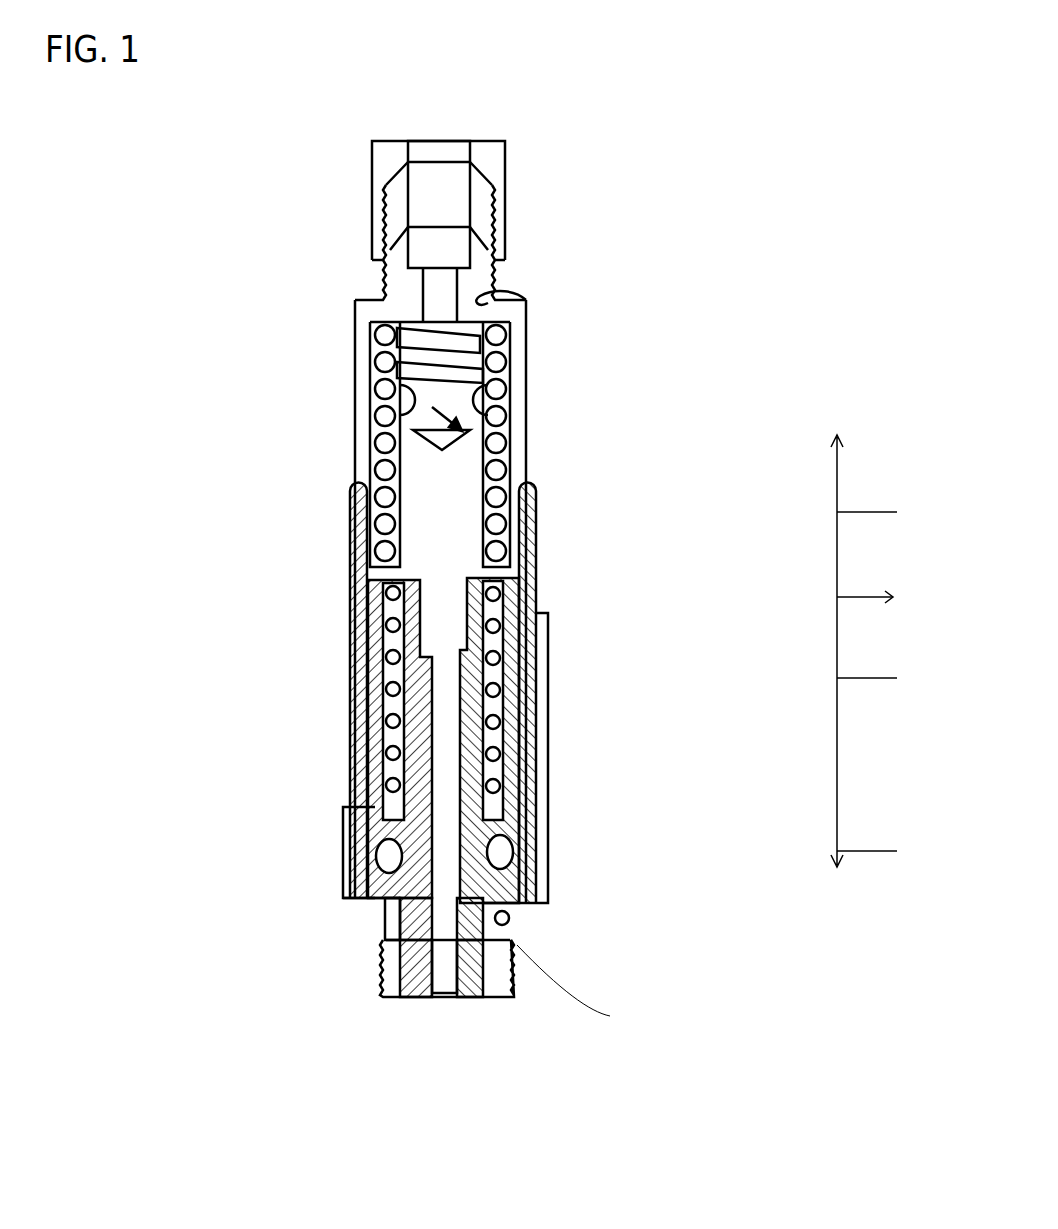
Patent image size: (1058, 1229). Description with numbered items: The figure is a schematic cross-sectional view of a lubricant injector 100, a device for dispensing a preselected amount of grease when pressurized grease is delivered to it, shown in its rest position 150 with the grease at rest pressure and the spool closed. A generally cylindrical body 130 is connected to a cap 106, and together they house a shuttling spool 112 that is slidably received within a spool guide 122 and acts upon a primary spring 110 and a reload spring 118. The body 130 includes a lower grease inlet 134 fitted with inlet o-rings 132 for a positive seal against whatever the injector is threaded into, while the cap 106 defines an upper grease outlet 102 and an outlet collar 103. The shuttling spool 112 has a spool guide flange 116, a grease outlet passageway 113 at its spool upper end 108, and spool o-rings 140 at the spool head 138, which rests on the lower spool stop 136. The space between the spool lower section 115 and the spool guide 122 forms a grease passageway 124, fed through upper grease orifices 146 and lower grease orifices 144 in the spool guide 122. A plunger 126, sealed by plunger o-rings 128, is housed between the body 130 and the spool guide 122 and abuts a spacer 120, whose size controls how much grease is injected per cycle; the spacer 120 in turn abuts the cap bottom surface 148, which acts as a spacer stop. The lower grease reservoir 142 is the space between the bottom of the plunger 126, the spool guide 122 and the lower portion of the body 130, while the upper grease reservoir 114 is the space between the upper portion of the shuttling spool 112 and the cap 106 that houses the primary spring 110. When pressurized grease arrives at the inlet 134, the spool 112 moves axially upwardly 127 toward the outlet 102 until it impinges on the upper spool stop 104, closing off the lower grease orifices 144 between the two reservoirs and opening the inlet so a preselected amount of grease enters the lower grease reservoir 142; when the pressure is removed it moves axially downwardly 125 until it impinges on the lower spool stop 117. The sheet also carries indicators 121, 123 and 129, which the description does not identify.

The lubricant injector 100 is at (762, 112).
The rest position 150 is at (252, 194).
The outlet 102 is at (425, 182).
The outlet collar 103 is at (493, 157).
The upper spool stop 104 is at (473, 323).
The cap 106 is at (527, 320).
The spool upper end 108 is at (372, 378).
The primary spring 110 is at (507, 397).
The shuttling spool 112 is at (438, 503).
The grease outlet passageway 113 is at (490, 433).
The upper grease reservoir 114 is at (372, 440).
The spool lower section 115 is at (440, 748).
The spool guide flange 116 is at (350, 568).
The lower spool stop 117 is at (536, 567).
The reload spring 118 is at (385, 697).
The spacer 120 is at (548, 650).
The intermediate position 121 is at (899, 600).
The spool guide 122 is at (519, 697).
The lower position 123 is at (899, 680).
The grease passageway 124 is at (519, 786).
The axially downward direction 125 is at (899, 852).
The plunger 126 is at (348, 800).
The axially upward direction 127 is at (899, 516).
The plunger o-rings 128 is at (385, 858).
The outlet region 129 is at (610, 1016).
The body 130 is at (536, 878).
The inlet o-rings 132 is at (512, 922).
The inlet 134 is at (425, 998).
The lower spool stop 136 is at (490, 998).
The spool head 138 is at (383, 965).
The spool o-rings 140 is at (442, 933).
The lower grease reservoir 142 is at (400, 900).
The lower grease orifices 144 is at (393, 920).
The upper grease orifices 146 is at (395, 645).
The cap bottom surface 148 is at (368, 600).